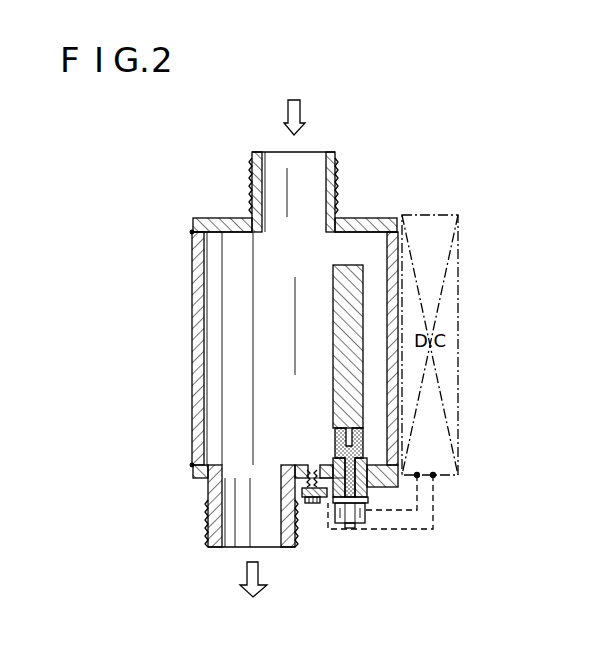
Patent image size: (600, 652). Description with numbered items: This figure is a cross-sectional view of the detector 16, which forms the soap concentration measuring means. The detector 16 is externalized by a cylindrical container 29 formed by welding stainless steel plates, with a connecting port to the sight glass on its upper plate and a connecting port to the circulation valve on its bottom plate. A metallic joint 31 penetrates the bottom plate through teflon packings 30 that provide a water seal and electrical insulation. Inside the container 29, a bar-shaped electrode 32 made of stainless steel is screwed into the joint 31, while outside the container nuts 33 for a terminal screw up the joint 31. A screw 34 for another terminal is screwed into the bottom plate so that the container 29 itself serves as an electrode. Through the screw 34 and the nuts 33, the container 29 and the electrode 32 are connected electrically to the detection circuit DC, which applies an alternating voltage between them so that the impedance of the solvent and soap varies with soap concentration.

The detector 16 is at (374, 194).
The cylindrical container 29 is at (192, 261).
The bar-shaped electrode 32 is at (350, 265).
The metallic joint 31 is at (362, 428).
The teflon packings 30 is at (361, 466).
The nuts 33 is at (358, 523).
The screw 34 is at (309, 503).